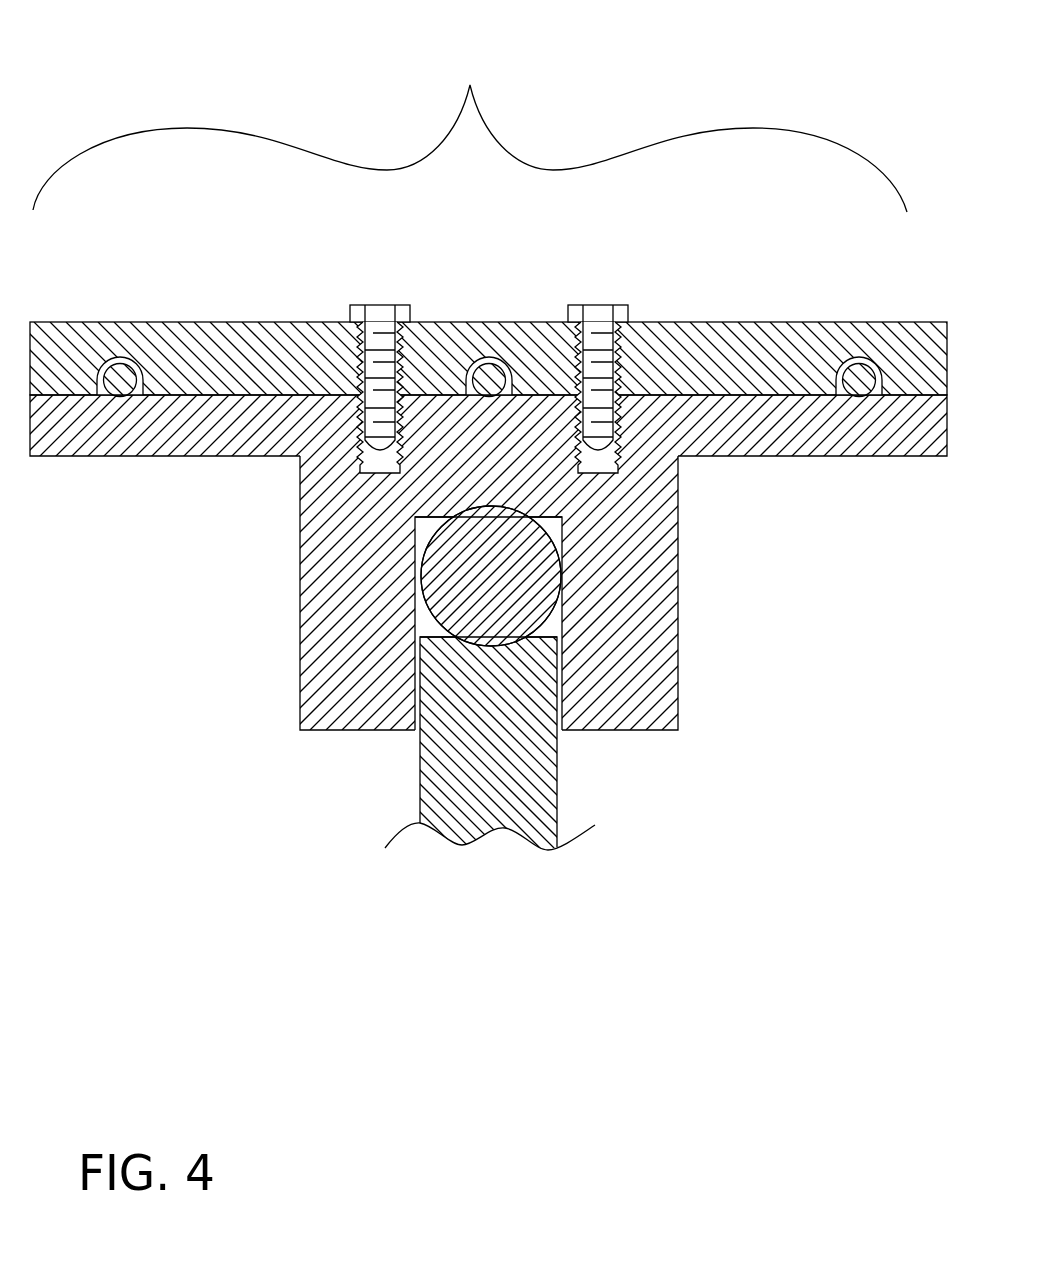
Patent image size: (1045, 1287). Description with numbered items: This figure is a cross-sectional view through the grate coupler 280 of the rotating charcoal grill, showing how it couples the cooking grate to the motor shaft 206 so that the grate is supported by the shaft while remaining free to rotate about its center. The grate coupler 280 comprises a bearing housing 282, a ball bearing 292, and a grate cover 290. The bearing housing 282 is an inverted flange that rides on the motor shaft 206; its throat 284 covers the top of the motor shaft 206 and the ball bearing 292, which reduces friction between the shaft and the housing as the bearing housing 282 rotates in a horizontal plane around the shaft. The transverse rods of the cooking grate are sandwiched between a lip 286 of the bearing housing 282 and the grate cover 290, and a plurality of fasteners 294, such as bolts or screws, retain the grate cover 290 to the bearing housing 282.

The grate coupler 280 is at (470, 110).
The grate cover 290 is at (192, 333).
The lip 286 is at (112, 456).
The bearing housing 282 is at (300, 668).
The throat 284 is at (562, 625).
The ball bearing 292 is at (553, 542).
The plurality of fasteners 294 is at (600, 305).
The motor shaft 206 is at (557, 797).